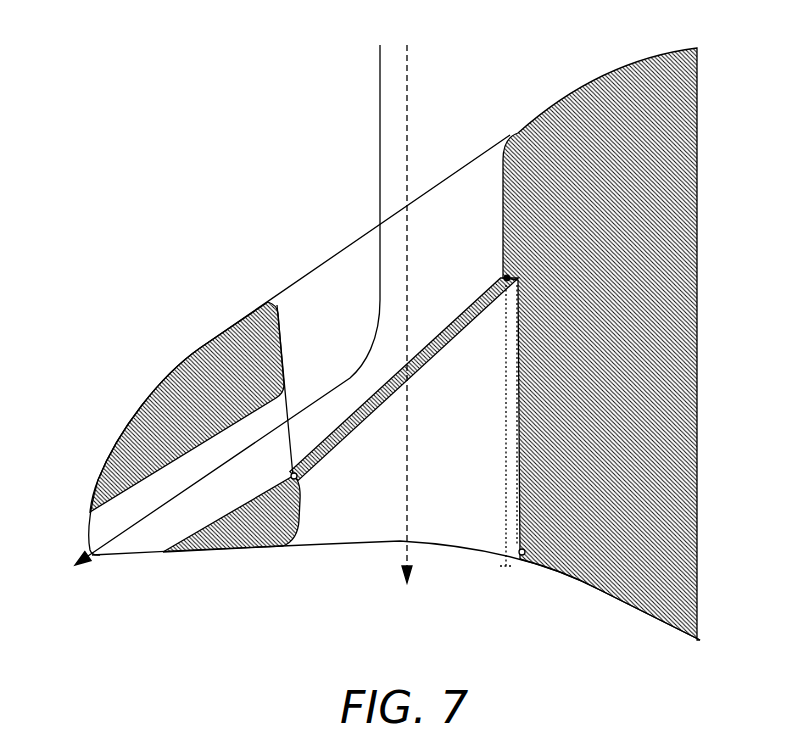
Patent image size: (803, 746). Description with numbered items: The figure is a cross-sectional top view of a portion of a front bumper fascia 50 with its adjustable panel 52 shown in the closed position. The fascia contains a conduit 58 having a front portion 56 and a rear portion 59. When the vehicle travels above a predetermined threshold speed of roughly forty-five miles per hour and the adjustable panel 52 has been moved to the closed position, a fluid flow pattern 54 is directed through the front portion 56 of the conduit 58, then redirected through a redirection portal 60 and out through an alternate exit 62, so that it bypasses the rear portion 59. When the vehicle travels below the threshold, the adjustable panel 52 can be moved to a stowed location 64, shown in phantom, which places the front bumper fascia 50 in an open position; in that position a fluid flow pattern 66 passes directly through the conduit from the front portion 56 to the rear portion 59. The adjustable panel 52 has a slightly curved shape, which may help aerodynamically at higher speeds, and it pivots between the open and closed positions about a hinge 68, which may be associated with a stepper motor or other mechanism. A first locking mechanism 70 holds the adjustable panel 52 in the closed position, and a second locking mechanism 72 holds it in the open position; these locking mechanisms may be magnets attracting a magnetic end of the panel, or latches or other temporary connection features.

The front bumper fascia 50 is at (128, 205).
The adjustable panel 52 is at (446, 349).
The fluid flow pattern 54 is at (378, 177).
The front portion 56 is at (463, 128).
The conduit 58 is at (392, 473).
The rear portion 59 is at (461, 586).
The redirection portal 60 is at (213, 517).
The alternate exit 62 is at (130, 585).
The stowed location 64 is at (506, 491).
The fluid flow pattern 66 is at (408, 82).
The hinge 68 is at (503, 276).
The first locking mechanism 70 is at (299, 482).
The second locking mechanism 72 is at (524, 562).